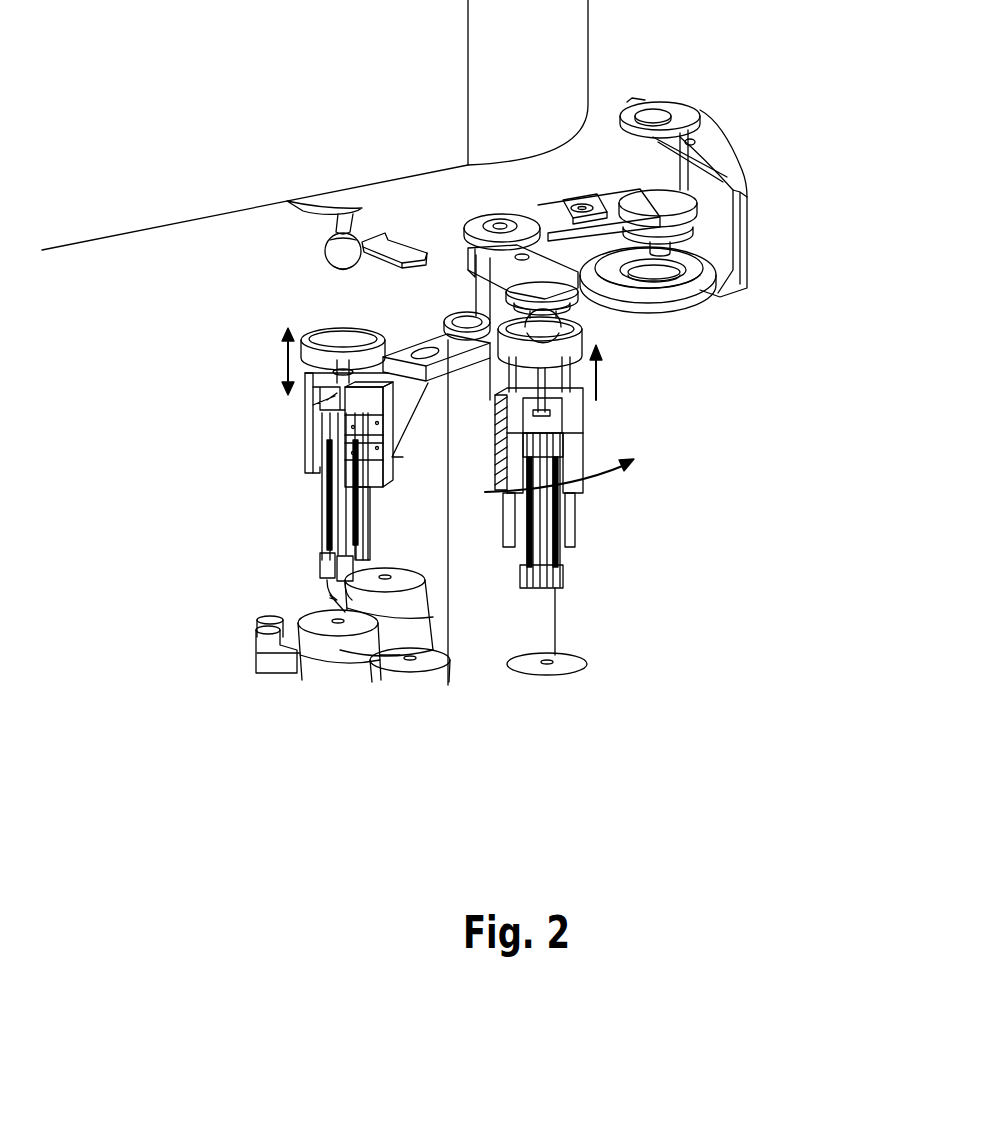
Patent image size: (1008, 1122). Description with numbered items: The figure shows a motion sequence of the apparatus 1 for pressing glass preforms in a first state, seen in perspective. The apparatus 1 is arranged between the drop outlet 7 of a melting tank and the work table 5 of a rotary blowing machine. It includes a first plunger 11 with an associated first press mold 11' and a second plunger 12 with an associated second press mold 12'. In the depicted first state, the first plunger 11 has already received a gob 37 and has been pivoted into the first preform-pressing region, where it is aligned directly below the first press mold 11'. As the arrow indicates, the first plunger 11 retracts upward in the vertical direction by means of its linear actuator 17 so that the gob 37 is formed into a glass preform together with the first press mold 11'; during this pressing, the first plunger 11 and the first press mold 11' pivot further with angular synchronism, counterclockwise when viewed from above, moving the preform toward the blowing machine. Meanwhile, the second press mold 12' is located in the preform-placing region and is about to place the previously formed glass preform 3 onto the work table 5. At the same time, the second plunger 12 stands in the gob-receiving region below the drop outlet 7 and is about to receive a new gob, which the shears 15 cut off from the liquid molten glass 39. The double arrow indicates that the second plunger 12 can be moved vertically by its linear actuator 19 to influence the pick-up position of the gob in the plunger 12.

The apparatus 1 is at (728, 560).
The glass preform 3 is at (672, 262).
The work table 5 is at (730, 262).
The drop outlet 7 is at (347, 205).
The first plunger 11 is at (632, 452).
The first press mold 11' is at (562, 232).
The second plunger 12 is at (342, 407).
The second press mold 12' is at (701, 170).
The shears 15 is at (397, 248).
The linear actuator 17 is at (557, 537).
The linear actuator 19 is at (320, 530).
The gob 37 is at (582, 317).
The liquid molten glass 39 is at (333, 252).